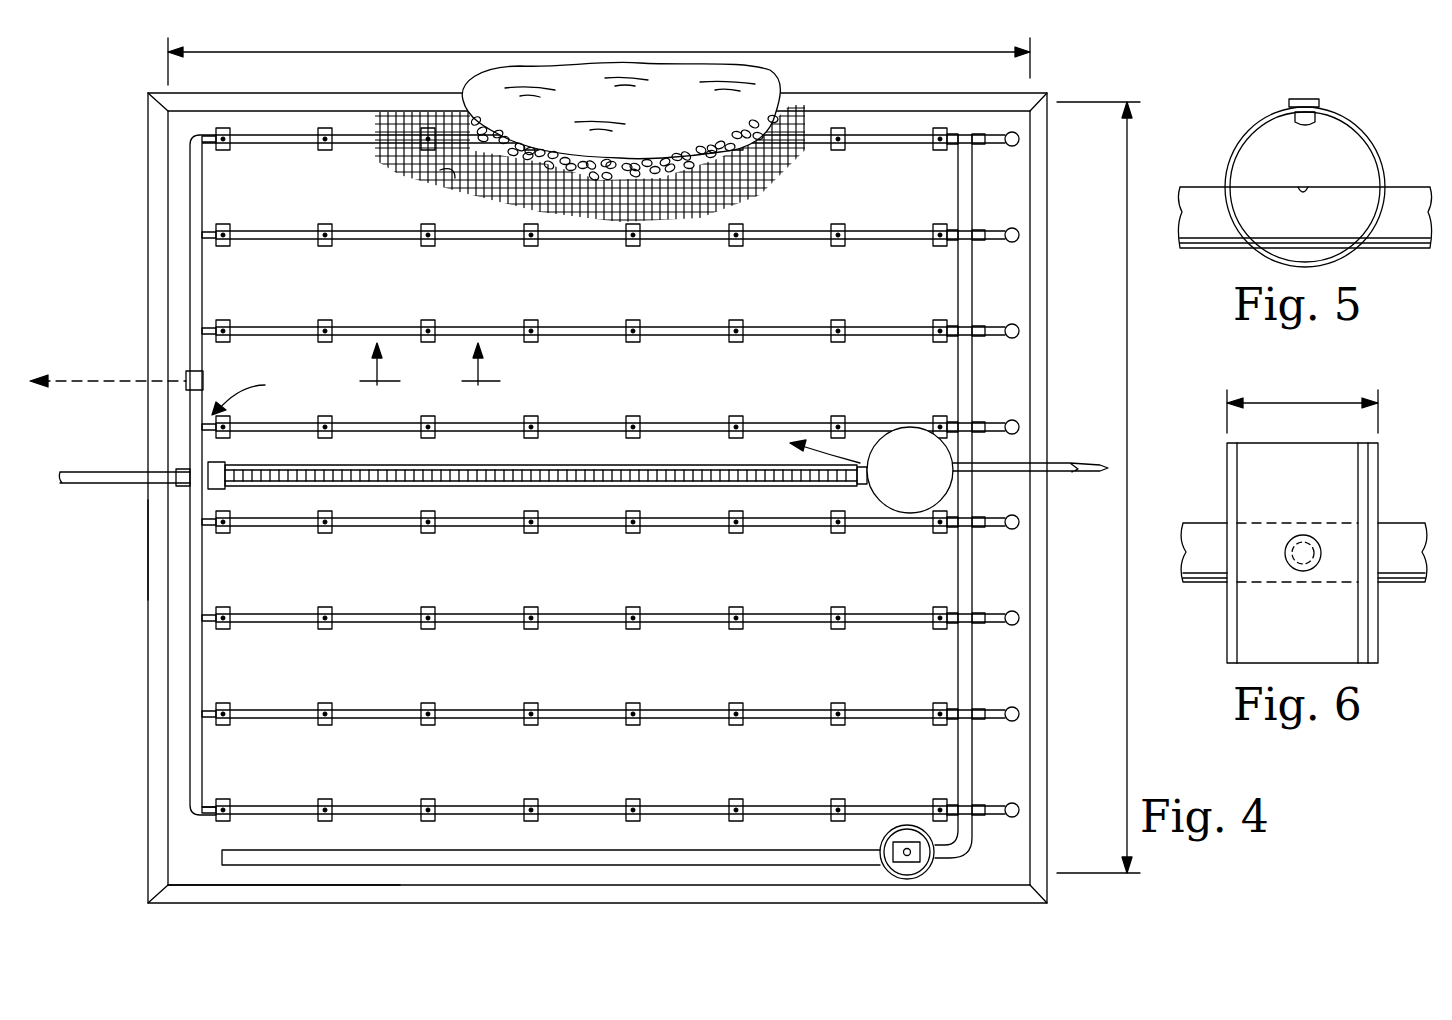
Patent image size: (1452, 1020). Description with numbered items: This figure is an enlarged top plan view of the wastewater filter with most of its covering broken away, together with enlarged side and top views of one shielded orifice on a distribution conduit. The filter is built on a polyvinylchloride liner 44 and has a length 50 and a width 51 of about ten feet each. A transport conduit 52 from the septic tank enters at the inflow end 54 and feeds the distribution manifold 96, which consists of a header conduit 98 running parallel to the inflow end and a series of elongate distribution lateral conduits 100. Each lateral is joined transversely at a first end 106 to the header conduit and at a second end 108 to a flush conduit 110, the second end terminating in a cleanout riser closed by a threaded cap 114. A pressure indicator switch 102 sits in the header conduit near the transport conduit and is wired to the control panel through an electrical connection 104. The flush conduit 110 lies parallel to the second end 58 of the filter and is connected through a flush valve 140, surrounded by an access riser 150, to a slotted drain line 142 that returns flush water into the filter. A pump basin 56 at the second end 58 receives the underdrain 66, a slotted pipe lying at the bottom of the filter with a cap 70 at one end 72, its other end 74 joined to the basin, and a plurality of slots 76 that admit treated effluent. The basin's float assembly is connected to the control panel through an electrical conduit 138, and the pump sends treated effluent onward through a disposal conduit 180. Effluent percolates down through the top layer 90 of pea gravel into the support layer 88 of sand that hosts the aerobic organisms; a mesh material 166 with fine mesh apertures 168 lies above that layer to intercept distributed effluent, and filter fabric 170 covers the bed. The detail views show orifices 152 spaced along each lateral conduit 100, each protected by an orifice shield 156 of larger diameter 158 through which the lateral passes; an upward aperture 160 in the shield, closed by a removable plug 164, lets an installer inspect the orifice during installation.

In FIG. 4, the liner 44 is at (205, 885).
In FIG. 4, the length 50 is at (357, 52).
In FIG. 4, the width 51 is at (1127, 570).
In FIG. 4, the transport conduit 52 is at (130, 470).
In FIG. 4, the inflow end 54 is at (148, 545).
In FIG. 4, the pump basin 56 is at (912, 438).
In FIG. 4, the second end 58 is at (1047, 360).
In FIG. 4, the underdrain 66 is at (537, 477).
In FIG. 4, the cap 70 is at (222, 462).
In FIG. 4, the one end 72 is at (232, 490).
In FIG. 4, the other end 74 is at (880, 500).
In FIG. 4, the slots 76 is at (450, 470).
In FIG. 4, the support layer 88 is at (643, 493).
In FIG. 4, the top layer 90 is at (715, 135).
In FIG. 4, the distribution manifold 96 is at (257, 396).
In FIG. 4, the header conduit 98 is at (200, 310).
In FIG. 4, the distribution lateral conduit 100 is at (690, 240).
In FIG. 5, the distribution lateral conduit 100 is at (1218, 187).
In FIG. 6, the distribution lateral conduit 100 is at (1200, 523).
In FIG. 4, the pressure indicator switch 102 is at (205, 380).
In FIG. 4, the electrical connection 104 is at (128, 372).
In FIG. 4, the first end 106 is at (213, 148).
In FIG. 4, the second end 108 is at (952, 146).
In FIG. 4, the flush conduit 110 is at (972, 200).
In FIG. 4, the threaded cap 114 is at (1018, 133).
In FIG. 4, the electrical conduit 138 is at (812, 440).
In FIG. 4, the flush valve 140 is at (907, 848).
In FIG. 4, the drain line 142 is at (603, 850).
In FIG. 4, the access riser 150 is at (885, 845).
In FIG. 5, the orifices 152 is at (1302, 190).
In FIG. 6, the orifices 152 is at (1318, 582).
In FIG. 4, the orifice shield 156 is at (736, 416).
In FIG. 5, the orifice shield 156 is at (1380, 165).
In FIG. 6, the orifice shield 156 is at (1418, 495).
In FIG. 6, the diameter 158 is at (1340, 403).
In FIG. 6, the aperture 160 is at (1320, 540).
In FIG. 5, the plug 164 is at (1298, 98).
In FIG. 4, the mesh material 166 is at (452, 172).
In FIG. 4, the mesh apertures 168 is at (400, 178).
In FIG. 4, the filter fabric 170 is at (765, 82).
In FIG. 4, the disposal conduit 180 is at (1075, 463).